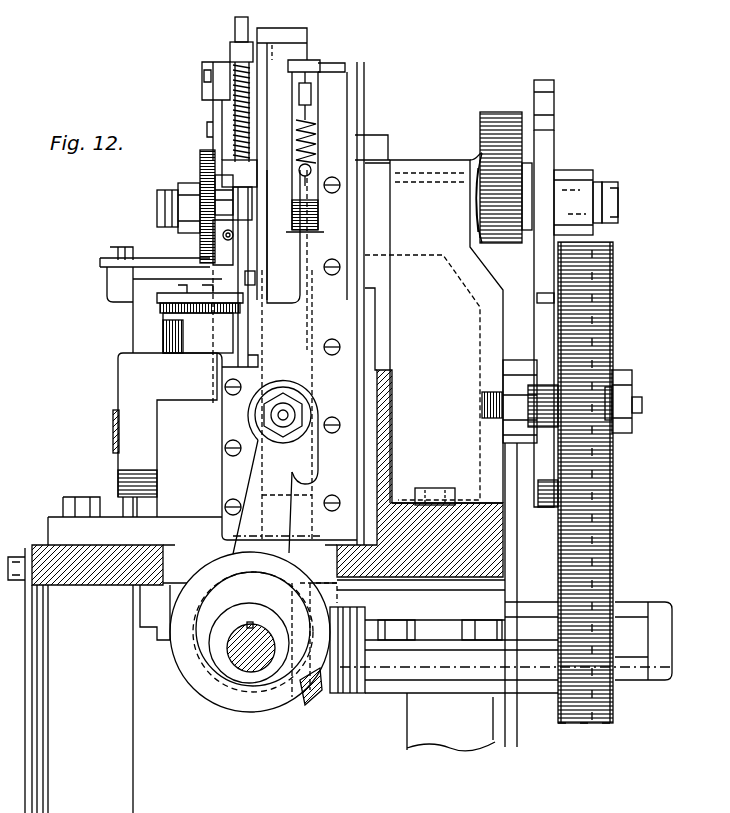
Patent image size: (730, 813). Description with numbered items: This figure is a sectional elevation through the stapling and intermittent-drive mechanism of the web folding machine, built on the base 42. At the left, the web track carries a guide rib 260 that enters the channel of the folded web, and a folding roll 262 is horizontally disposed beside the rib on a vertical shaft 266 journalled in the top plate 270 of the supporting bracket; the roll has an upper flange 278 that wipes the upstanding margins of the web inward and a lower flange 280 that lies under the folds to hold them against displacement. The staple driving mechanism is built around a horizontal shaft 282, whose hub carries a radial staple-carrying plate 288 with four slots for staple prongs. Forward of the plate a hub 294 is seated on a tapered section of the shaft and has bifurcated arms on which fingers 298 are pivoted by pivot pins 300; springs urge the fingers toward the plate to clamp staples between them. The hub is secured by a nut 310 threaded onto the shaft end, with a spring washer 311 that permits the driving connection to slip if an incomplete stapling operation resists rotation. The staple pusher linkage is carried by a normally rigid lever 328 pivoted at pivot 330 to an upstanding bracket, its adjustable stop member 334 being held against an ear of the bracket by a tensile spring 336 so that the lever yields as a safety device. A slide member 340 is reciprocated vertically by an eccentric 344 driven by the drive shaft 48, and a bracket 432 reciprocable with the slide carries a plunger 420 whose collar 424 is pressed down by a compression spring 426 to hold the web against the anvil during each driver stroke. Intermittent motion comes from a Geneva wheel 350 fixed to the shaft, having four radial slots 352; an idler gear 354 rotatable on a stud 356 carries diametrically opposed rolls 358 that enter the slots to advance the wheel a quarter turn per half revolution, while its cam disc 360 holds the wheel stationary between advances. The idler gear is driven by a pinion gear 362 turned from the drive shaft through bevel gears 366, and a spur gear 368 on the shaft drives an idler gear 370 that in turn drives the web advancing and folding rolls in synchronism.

The plunger 420 is at (236, 26).
The bracket 432 is at (230, 50).
The compression spring 426 is at (232, 103).
The collar 424 is at (224, 162).
The hub 294 is at (205, 185).
The spring washer 311 is at (180, 190).
The nut 310 is at (165, 203).
The pivot pin 300 is at (222, 237).
The lever 328 is at (320, 77).
The pivot 330 is at (352, 87).
The adjustable stop member 334 is at (322, 93).
The tensile spring 336 is at (320, 147).
The idler gear 370 is at (490, 128).
The Geneva wheel 350 is at (552, 147).
The horizontal shaft 282 is at (533, 182).
The spur gear 368 is at (480, 206).
The radial slots 352 is at (547, 300).
The idler gear 354 is at (613, 342).
The stud 356 is at (628, 378).
The cam disc 360 is at (540, 348).
The rolls 358 is at (505, 443).
The pinion gear 362 is at (610, 573).
The upper flange 278 is at (160, 295).
The folding roll 262 is at (160, 305).
The lower flange 280 is at (163, 312).
The guide rib 260 is at (248, 318).
The fingers 298 is at (207, 263).
The staple-carrying plate 288 is at (255, 279).
The top plate 270 is at (128, 386).
The vertical shaft 266 is at (176, 392).
The slide member 340 is at (300, 397).
The eccentric 344 is at (253, 632).
The drive shaft 48 is at (250, 660).
The bevel gears 366 is at (308, 703).
The base 42 is at (97, 573).